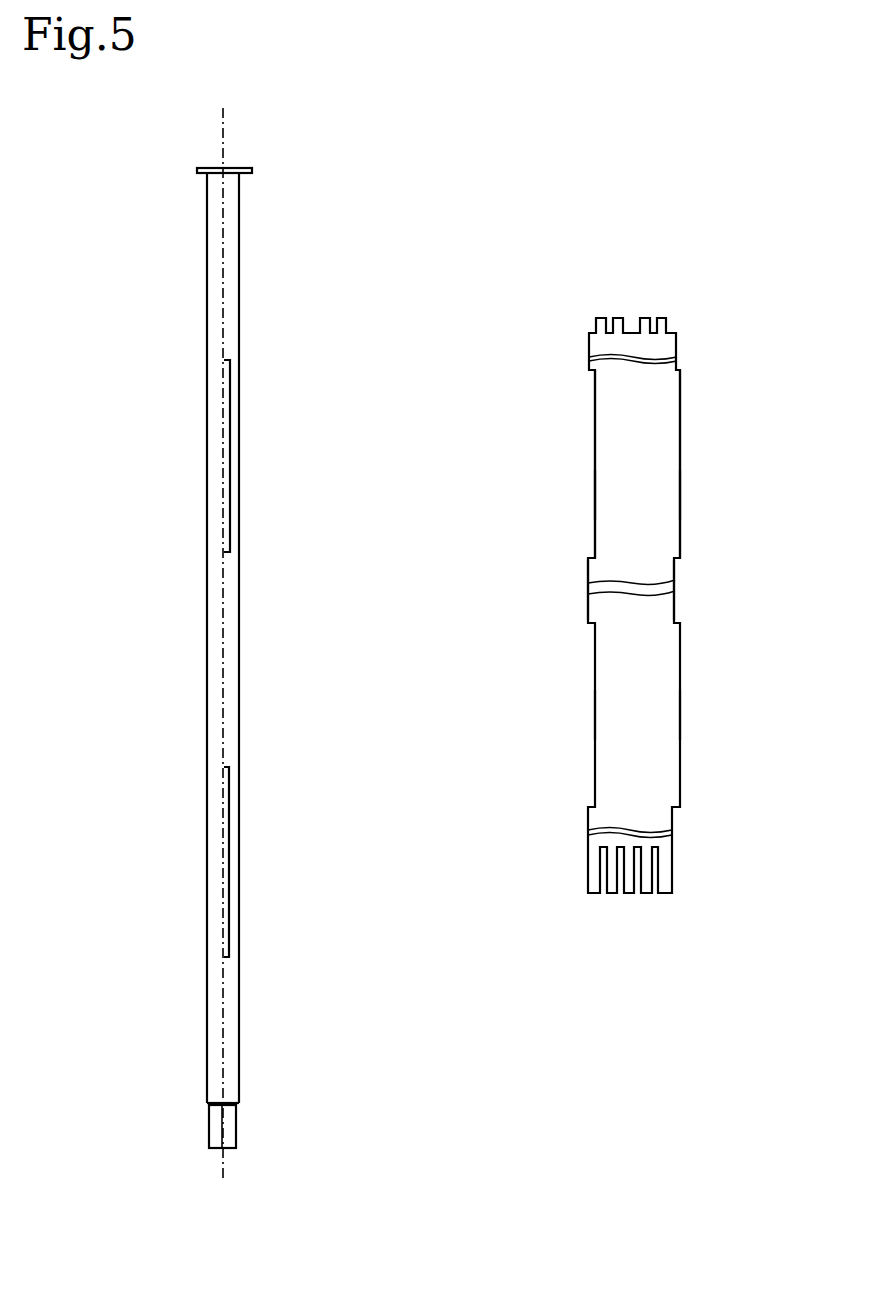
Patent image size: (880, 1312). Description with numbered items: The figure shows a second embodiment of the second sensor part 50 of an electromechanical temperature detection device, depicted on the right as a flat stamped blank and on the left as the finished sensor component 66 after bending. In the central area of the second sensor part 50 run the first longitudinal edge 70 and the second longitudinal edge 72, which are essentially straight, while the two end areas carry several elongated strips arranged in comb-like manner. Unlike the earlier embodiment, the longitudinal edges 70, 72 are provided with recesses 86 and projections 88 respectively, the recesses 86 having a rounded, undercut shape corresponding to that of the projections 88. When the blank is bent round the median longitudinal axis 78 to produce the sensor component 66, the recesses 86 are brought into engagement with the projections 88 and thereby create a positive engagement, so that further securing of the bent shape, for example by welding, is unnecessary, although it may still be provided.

The second sensor part 50 is at (527, 273).
The sensor component 66 is at (238, 397).
The first longitudinal edge 70 is at (574, 440).
The second longitudinal edge 72 is at (706, 432).
The median longitudinal axis 78 is at (227, 133).
The recesses 86 is at (595, 493).
The projections 88 is at (680, 495).